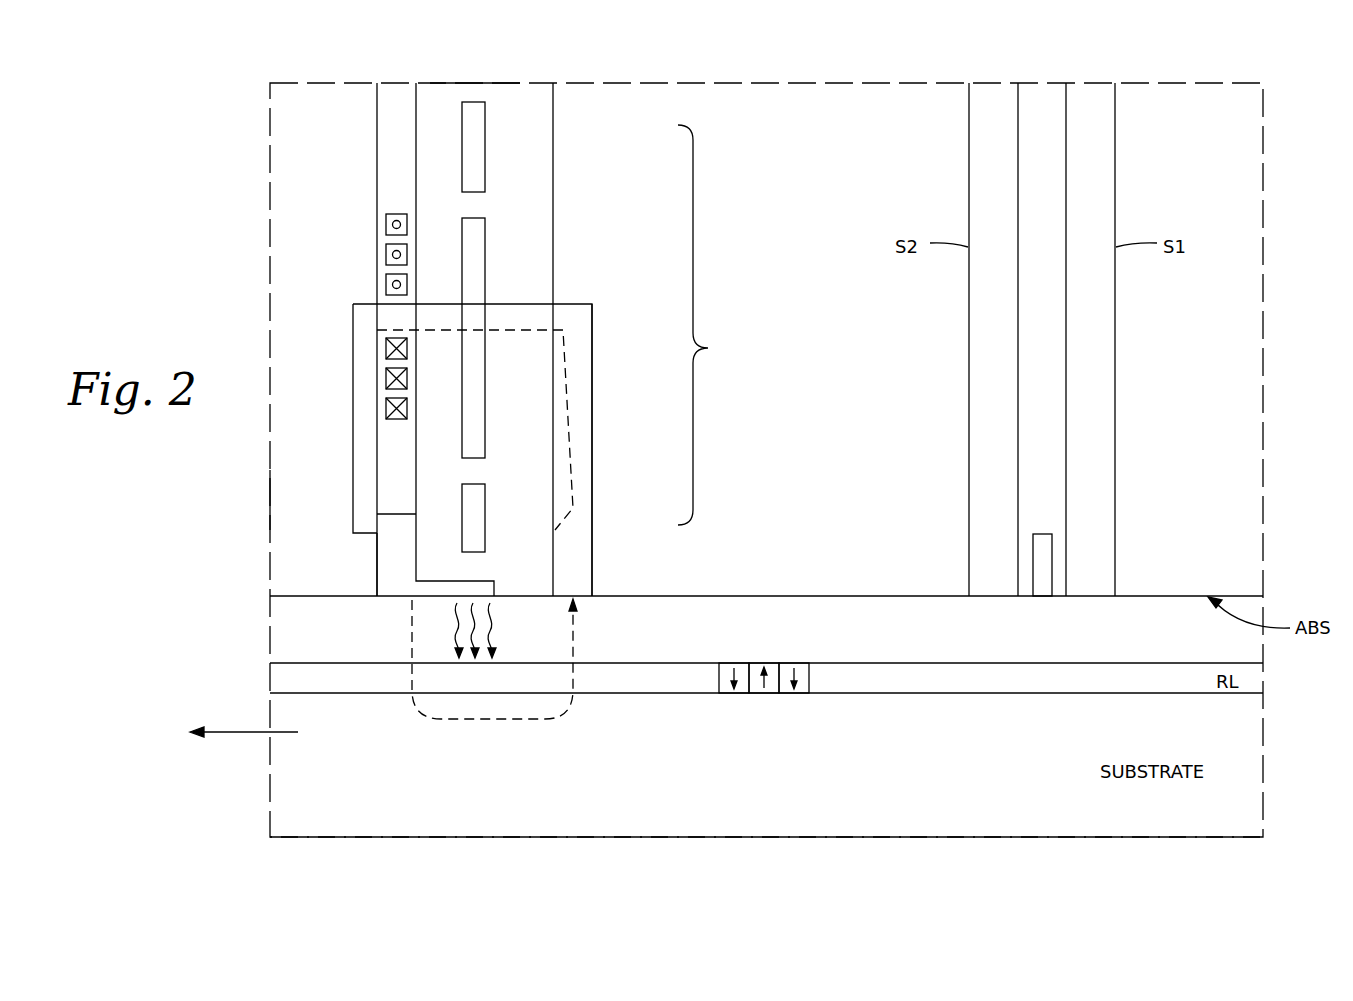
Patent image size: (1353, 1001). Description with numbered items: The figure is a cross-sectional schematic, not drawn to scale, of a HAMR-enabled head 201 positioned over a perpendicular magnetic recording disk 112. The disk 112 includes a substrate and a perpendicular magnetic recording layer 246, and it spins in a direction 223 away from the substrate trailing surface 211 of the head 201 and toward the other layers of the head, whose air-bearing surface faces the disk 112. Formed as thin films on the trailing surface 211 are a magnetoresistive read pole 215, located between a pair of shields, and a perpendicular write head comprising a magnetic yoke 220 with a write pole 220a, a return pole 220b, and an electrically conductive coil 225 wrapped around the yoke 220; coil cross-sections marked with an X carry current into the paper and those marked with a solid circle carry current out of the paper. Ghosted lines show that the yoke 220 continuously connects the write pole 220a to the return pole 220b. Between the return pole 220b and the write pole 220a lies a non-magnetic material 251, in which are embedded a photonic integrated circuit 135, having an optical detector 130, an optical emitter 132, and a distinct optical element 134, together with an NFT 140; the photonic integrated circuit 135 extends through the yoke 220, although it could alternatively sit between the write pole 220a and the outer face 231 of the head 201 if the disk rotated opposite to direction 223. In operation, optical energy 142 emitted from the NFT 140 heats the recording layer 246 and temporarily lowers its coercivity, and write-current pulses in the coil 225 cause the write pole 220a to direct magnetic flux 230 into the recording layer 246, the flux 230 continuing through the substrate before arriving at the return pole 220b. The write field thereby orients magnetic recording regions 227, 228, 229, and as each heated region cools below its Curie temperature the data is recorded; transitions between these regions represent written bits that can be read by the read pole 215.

The head 201 is at (248, 88).
The non-magnetic material 251 is at (470, 88).
The substrate trailing surface 211 is at (1113, 118).
The optical detector 130 is at (473, 145).
The optical emitter 132 is at (473, 377).
The optical element 134 is at (473, 517).
The photonic integrated circuit 135 is at (716, 325).
The electrically conductive coil 225 is at (370, 215).
The magnetic yoke 220 is at (352, 323).
The write pole 220a is at (377, 582).
The return pole 220b is at (594, 560).
The outer face 231 is at (281, 500).
The NFT 140 is at (474, 590).
The optical energy 142 is at (448, 630).
The perpendicular magnetic recording layer 246 is at (281, 682).
The direction 223 is at (232, 740).
The perpendicular magnetic recording disk 112 is at (284, 810).
The magnetic flux 230 is at (482, 721).
The magnetic recording region 228 is at (723, 696).
The magnetic recording region 227 is at (757, 696).
The magnetic recording region 229 is at (797, 696).
The magnetoresistive read pole 215 is at (1040, 551).